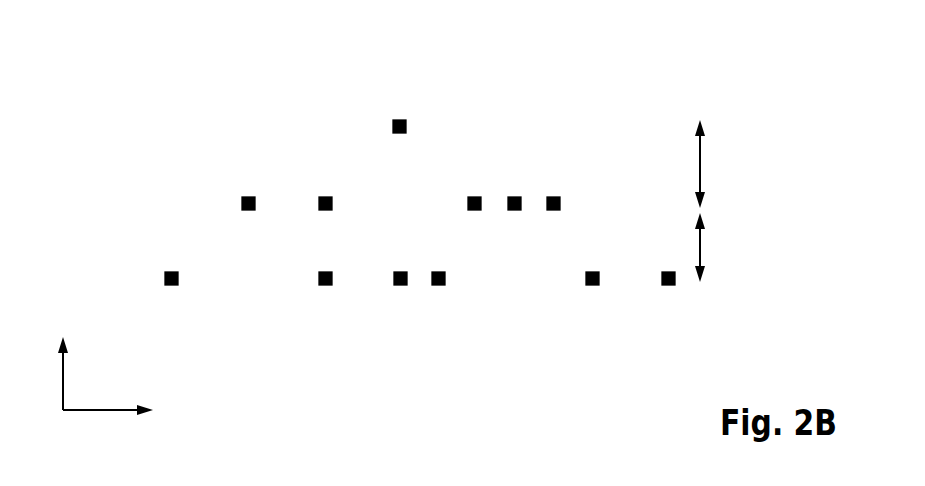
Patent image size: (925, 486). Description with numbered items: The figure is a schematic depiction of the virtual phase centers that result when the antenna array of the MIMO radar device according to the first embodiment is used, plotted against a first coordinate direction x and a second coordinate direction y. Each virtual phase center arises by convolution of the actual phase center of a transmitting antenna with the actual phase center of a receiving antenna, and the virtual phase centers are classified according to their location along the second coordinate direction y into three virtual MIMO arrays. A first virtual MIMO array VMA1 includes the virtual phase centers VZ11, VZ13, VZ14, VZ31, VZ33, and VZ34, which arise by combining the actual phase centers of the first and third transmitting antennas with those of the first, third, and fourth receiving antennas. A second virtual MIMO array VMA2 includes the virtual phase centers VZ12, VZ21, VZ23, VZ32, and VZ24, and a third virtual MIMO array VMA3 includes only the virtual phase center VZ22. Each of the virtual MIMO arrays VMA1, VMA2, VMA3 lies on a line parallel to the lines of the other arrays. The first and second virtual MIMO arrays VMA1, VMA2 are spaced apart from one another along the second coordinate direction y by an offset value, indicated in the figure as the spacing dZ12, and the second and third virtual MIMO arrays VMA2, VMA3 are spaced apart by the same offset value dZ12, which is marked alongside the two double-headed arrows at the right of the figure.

The virtual phase center VZ11 is at (171, 285).
The virtual phase center VZ12 is at (248, 210).
The virtual phase center VZ13 is at (325, 285).
The virtual phase center VZ14 is at (400, 285).
The virtual phase center VZ21 is at (325, 196).
The virtual phase center VZ22 is at (399, 120).
The virtual phase center VZ23 is at (475, 196).
The virtual phase center VZ24 is at (553, 196).
The virtual phase center VZ31 is at (438, 272).
The virtual phase center VZ32 is at (514, 210).
The virtual phase center VZ33 is at (592, 285).
The virtual phase center VZ34 is at (668, 272).
The first virtual MIMO array VMA1 is at (728, 266).
The second virtual MIMO array VMA2 is at (728, 198).
The third virtual MIMO array VMA3 is at (728, 123).
The z-distance between ranges dZ12 is at (700, 172).
The first coordinate direction x is at (107, 411).
The second coordinate direction y is at (63, 378).